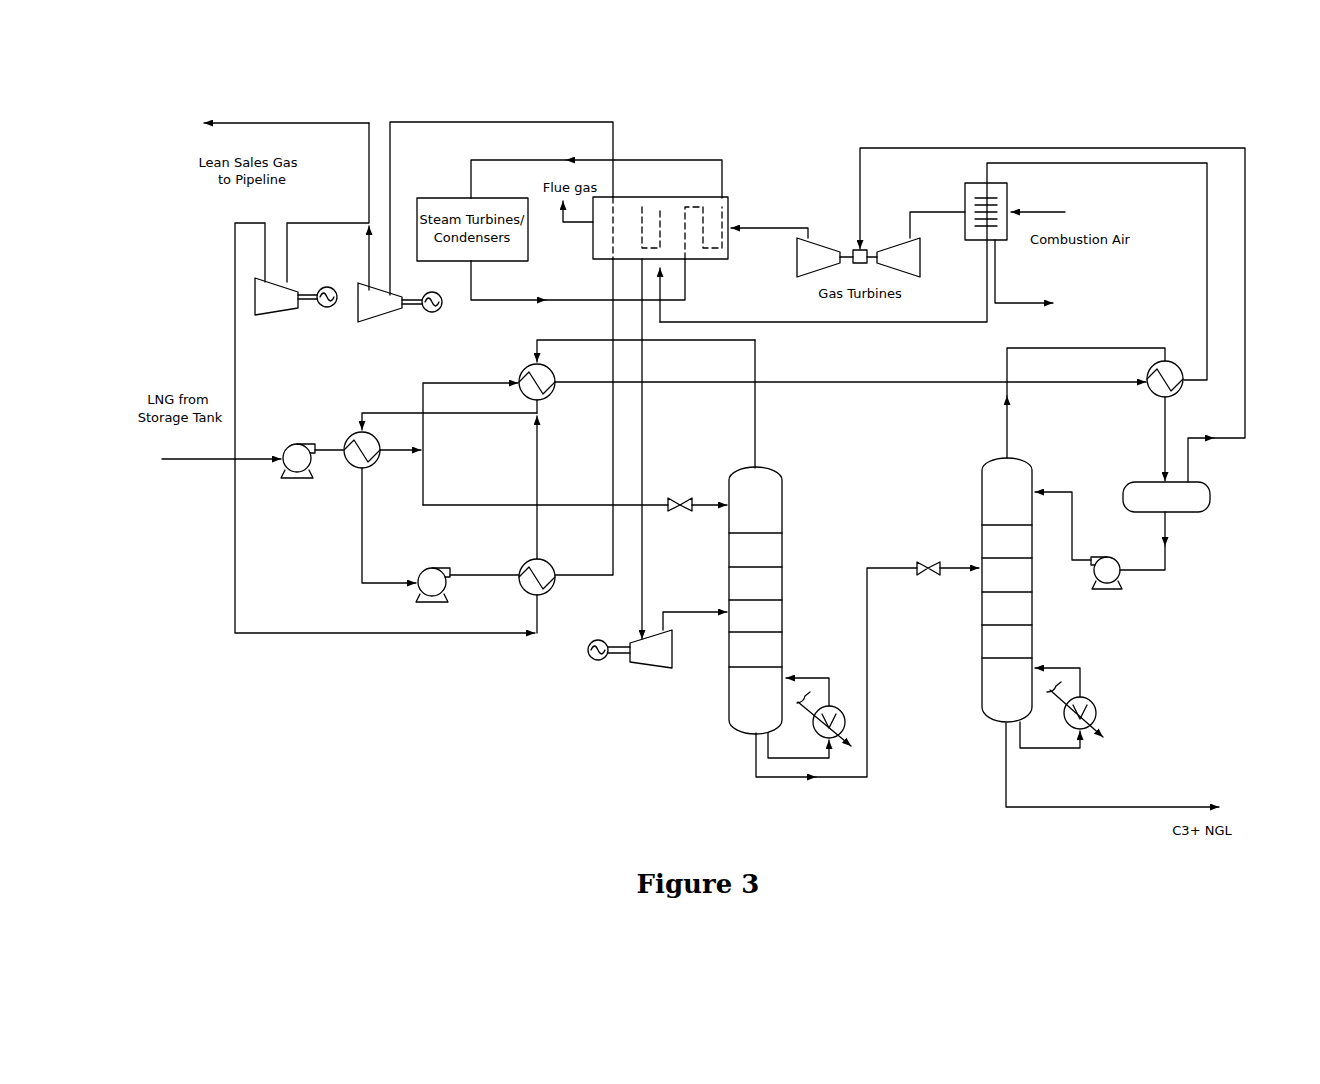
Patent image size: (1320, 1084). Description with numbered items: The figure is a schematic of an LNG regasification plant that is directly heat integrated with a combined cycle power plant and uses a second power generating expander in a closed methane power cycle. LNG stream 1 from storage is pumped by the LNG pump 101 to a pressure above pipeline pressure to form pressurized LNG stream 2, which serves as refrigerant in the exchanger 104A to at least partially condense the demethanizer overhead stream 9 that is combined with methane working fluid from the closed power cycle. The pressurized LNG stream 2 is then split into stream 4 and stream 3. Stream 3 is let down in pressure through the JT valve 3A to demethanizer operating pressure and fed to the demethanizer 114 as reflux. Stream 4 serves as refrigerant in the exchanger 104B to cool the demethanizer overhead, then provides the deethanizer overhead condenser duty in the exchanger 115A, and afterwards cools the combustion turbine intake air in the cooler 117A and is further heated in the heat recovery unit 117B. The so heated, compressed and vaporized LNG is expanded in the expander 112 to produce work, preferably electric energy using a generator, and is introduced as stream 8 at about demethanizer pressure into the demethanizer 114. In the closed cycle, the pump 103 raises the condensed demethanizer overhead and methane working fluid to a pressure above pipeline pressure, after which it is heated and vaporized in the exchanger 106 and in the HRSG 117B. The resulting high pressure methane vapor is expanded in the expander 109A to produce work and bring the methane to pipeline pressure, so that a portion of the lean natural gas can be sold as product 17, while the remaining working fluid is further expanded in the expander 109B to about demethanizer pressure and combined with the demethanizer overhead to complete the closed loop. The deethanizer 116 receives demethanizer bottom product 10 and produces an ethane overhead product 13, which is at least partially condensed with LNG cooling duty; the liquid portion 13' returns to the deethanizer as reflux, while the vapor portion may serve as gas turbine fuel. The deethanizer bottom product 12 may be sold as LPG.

The LNG stream 1 is at (172, 459).
The pressurized LNG stream 2 is at (332, 450).
The stream 3 is at (503, 505).
The JT valve 3A is at (669, 510).
The stream 4 is at (458, 383).
The stream 8 is at (705, 610).
The demethanizer overhead stream 9 is at (754, 413).
The demethanizer bottom product 10 is at (896, 567).
The deethanizer bottom product 12 is at (1175, 807).
The ethane overhead product 13 is at (1086, 385).
The liquid portion 13' is at (1142, 439).
The product 17 is at (327, 124).
The LNG pump 101 is at (297, 472).
The pump 103 is at (435, 598).
The exchanger 104A is at (368, 468).
The exchanger 104B is at (526, 365).
The exchanger 106 is at (543, 595).
The expander 109A is at (358, 322).
The expander 109B is at (263, 315).
The expander 112 is at (655, 668).
The demethanizer 114 is at (785, 473).
The exchanger 115A is at (1151, 370).
The deethanizer 116 is at (982, 468).
The cooler 117A is at (1010, 241).
The heat recovery unit 117B is at (712, 259).